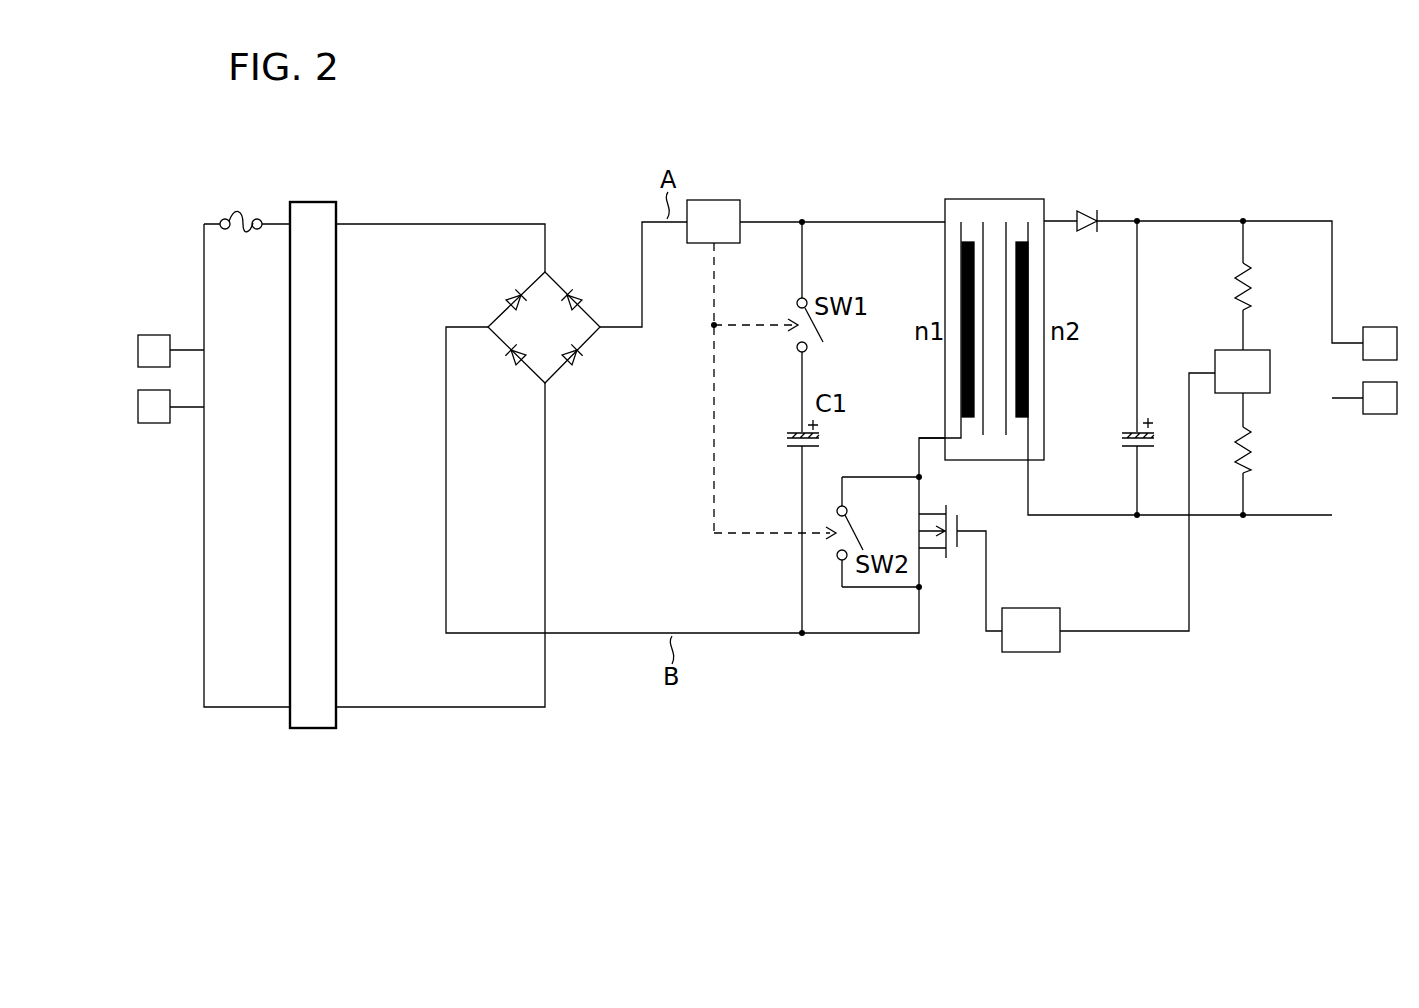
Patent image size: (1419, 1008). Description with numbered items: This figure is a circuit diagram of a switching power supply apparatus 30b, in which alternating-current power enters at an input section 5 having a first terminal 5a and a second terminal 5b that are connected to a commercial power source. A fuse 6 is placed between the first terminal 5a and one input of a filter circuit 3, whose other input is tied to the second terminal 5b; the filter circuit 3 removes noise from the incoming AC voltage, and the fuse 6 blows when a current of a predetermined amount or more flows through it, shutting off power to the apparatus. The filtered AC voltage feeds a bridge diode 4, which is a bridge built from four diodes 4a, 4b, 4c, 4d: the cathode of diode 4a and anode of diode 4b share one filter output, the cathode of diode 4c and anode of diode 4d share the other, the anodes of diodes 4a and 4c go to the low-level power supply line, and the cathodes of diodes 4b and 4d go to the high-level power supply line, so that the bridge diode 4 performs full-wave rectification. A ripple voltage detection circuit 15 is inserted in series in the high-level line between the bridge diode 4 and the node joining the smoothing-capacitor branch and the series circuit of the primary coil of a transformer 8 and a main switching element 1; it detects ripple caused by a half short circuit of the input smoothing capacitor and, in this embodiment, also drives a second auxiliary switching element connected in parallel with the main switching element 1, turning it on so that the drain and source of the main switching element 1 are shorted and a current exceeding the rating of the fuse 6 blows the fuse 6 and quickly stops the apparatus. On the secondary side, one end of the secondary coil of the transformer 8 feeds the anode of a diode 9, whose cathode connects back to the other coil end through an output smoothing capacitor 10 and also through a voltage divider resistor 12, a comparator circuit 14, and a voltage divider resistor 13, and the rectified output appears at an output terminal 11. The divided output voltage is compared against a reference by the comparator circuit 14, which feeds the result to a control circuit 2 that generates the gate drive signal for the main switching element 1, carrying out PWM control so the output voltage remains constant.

The main switching element 1 is at (921, 530).
The control circuit 2 is at (1048, 608).
The filter circuit 3 is at (332, 203).
The bridge diode 4 is at (545, 299).
The diode 4a is at (508, 297).
The diode 4b is at (580, 295).
The diode 4c is at (508, 364).
The diode 4d is at (580, 362).
The input section 5 is at (133, 345).
The first terminal 5a is at (138, 349).
The second terminal 5b is at (138, 405).
The fuse 6 is at (247, 226).
The transformer 8 is at (1005, 202).
The diode 9 is at (1088, 218).
The output smoothing capacitor 10 is at (1131, 433).
The output terminal 11 is at (1391, 319).
The voltage divider resistor 12 is at (1252, 297).
The voltage divider resistor 13 is at (1252, 460).
The comparator circuit 14 is at (1260, 350).
The ripple voltage detection circuit 15 is at (733, 202).
The switching power supply apparatus 30b is at (1251, 158).